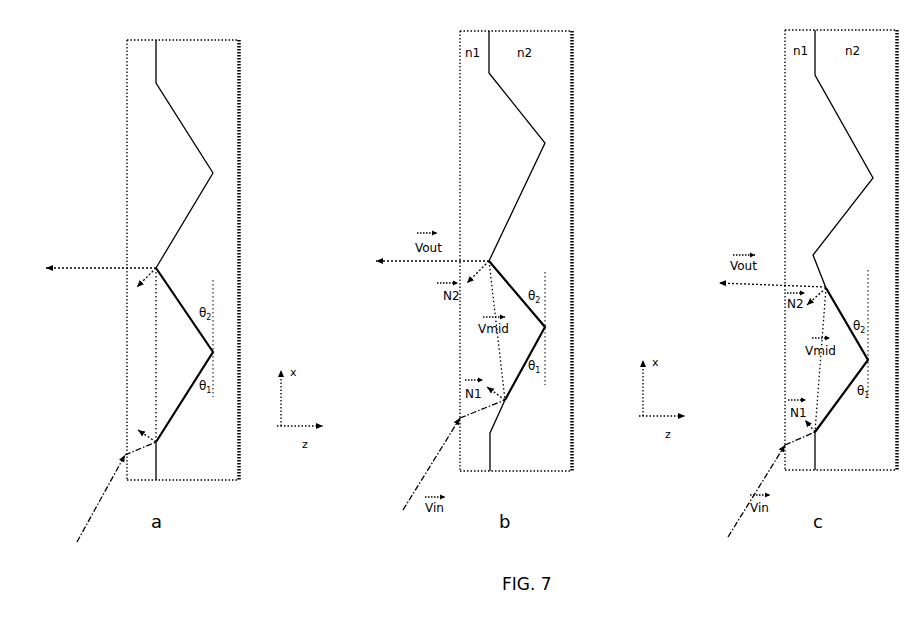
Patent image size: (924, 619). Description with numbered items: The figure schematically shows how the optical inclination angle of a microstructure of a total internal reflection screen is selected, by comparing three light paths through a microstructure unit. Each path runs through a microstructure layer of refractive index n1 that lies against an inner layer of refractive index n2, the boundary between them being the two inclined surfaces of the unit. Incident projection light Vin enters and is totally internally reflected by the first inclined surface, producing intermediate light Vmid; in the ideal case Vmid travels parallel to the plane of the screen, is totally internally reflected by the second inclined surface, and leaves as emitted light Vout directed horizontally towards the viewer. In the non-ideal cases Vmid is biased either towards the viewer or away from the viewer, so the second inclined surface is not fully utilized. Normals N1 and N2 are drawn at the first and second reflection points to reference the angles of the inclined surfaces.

The refractive index of the microstructure layer n1 is at (138, 260).
The refractive index of the inner layer n2 is at (213, 260).
The incident projection light Vin is at (82, 507).
The intermediate light Vmid is at (168, 329).
The emitted light Vout is at (78, 245).
The normal at entry interface N1 is at (126, 415).
The normal at exit interface N2 is at (126, 287).